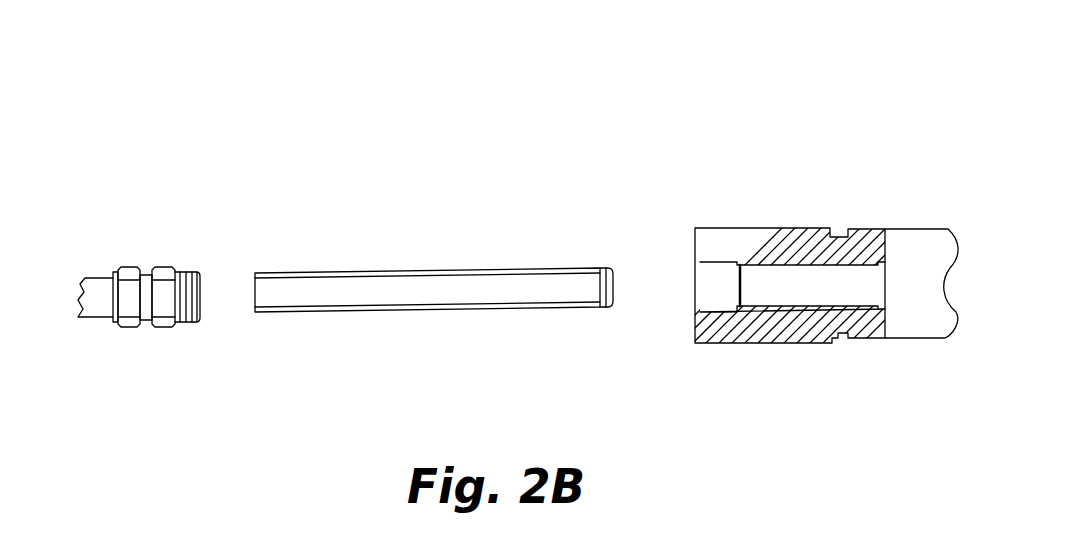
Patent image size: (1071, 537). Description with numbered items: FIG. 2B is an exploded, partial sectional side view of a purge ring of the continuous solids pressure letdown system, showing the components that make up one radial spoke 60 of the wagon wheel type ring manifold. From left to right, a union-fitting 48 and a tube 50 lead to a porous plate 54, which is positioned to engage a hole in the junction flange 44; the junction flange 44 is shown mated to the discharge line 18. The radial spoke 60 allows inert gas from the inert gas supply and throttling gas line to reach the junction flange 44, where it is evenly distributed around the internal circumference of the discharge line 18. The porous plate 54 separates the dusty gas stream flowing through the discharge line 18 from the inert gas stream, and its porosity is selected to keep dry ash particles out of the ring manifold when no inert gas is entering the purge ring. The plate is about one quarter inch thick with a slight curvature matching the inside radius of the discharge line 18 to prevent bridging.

The radial spoke 60 is at (600, 128).
The union-fitting 48 is at (157, 249).
The tube 50 is at (407, 270).
The porous plate 54 is at (605, 310).
The junction flange 44 is at (793, 333).
The discharge line 18 is at (920, 318).